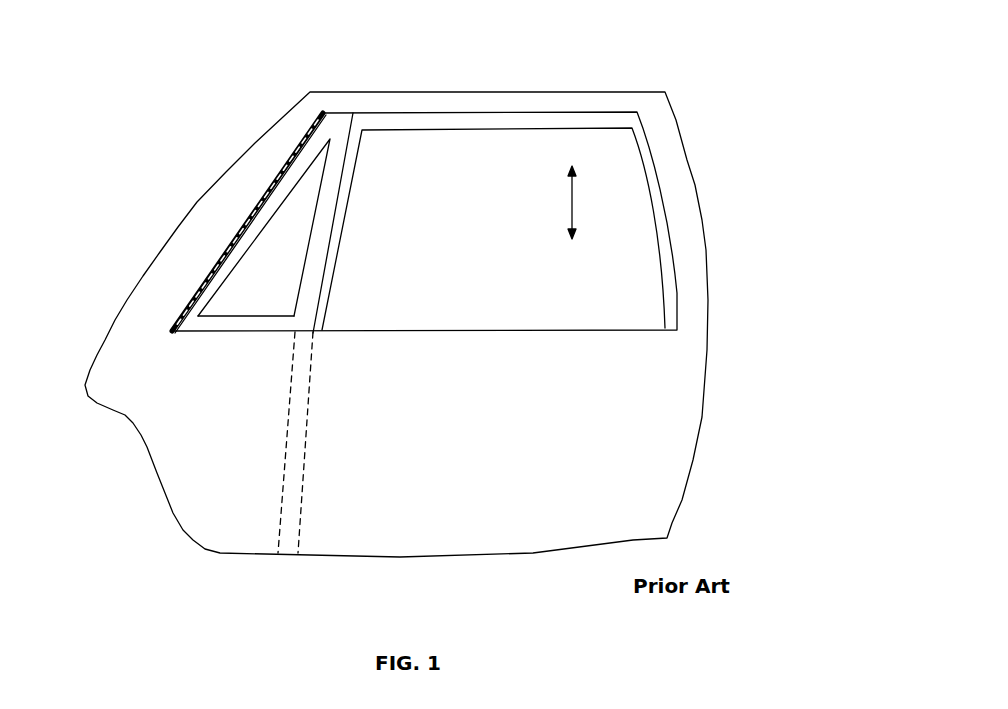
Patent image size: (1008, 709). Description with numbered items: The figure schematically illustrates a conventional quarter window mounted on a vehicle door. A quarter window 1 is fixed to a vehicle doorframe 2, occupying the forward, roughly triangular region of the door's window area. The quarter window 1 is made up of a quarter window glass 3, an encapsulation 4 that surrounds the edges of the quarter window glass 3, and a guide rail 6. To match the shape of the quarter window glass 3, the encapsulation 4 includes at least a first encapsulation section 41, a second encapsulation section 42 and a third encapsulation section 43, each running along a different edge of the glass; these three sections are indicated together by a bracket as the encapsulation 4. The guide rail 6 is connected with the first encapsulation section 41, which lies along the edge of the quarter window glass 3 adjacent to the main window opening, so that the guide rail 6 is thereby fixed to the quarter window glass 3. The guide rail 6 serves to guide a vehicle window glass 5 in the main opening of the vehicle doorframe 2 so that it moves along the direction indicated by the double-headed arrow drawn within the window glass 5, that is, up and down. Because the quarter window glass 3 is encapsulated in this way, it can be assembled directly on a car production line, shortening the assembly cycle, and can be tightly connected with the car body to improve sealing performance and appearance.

The quarter window 1 is at (252, 349).
The vehicle doorframe 2 is at (337, 102).
The quarter window glass 3 is at (283, 253).
The encapsulation 4 is at (83, 192).
The first encapsulation section 41 is at (324, 221).
The second encapsulation section 42 is at (227, 245).
The third encapsulation section 43 is at (253, 319).
The vehicle window glass 5 is at (632, 220).
The guide rail 6 is at (310, 380).